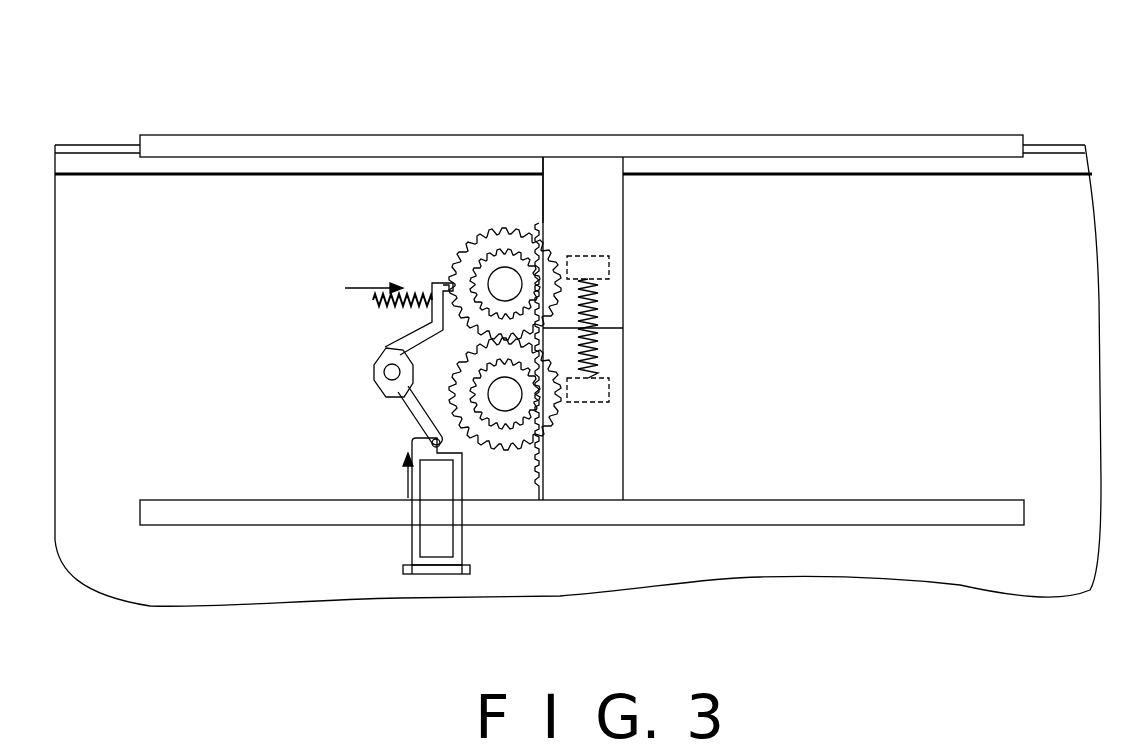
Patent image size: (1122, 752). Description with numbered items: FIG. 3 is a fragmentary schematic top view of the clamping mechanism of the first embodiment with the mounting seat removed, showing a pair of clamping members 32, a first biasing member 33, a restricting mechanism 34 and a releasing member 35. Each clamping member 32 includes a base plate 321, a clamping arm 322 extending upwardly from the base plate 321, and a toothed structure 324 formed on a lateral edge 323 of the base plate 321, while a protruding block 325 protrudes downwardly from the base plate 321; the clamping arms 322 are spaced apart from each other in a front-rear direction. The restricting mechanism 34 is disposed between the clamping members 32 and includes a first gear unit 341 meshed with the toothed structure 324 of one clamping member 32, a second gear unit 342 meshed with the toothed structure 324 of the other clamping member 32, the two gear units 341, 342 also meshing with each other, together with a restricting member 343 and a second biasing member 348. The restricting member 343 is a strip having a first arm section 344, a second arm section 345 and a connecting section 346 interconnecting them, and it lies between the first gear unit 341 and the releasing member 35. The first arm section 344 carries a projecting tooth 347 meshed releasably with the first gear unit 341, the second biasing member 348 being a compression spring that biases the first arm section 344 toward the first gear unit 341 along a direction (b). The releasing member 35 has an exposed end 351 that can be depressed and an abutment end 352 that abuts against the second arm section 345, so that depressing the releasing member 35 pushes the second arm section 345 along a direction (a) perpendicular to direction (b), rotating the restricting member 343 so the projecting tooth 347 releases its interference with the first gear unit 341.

The clamping member 32 is at (898, 123).
The clamping arm 322 is at (775, 147).
The first biasing member 33 is at (610, 338).
The base plate 321 is at (603, 222).
The protruding block 325 is at (608, 268).
The toothed structure 324 is at (530, 227).
The lateral edge 323 is at (542, 193).
The first gear unit 341 is at (483, 248).
The second gear unit 342 is at (485, 432).
The restricting mechanism 34 is at (348, 330).
The first arm section 344 is at (427, 337).
The projecting tooth 347 is at (440, 283).
The connecting section 346 is at (378, 382).
The second arm section 345 is at (407, 410).
The second biasing member 348 is at (373, 305).
The restricting member 343 is at (358, 365).
The releasing member 35 is at (407, 540).
The abutment end 352 is at (437, 440).
The exposed end 351 is at (465, 604).